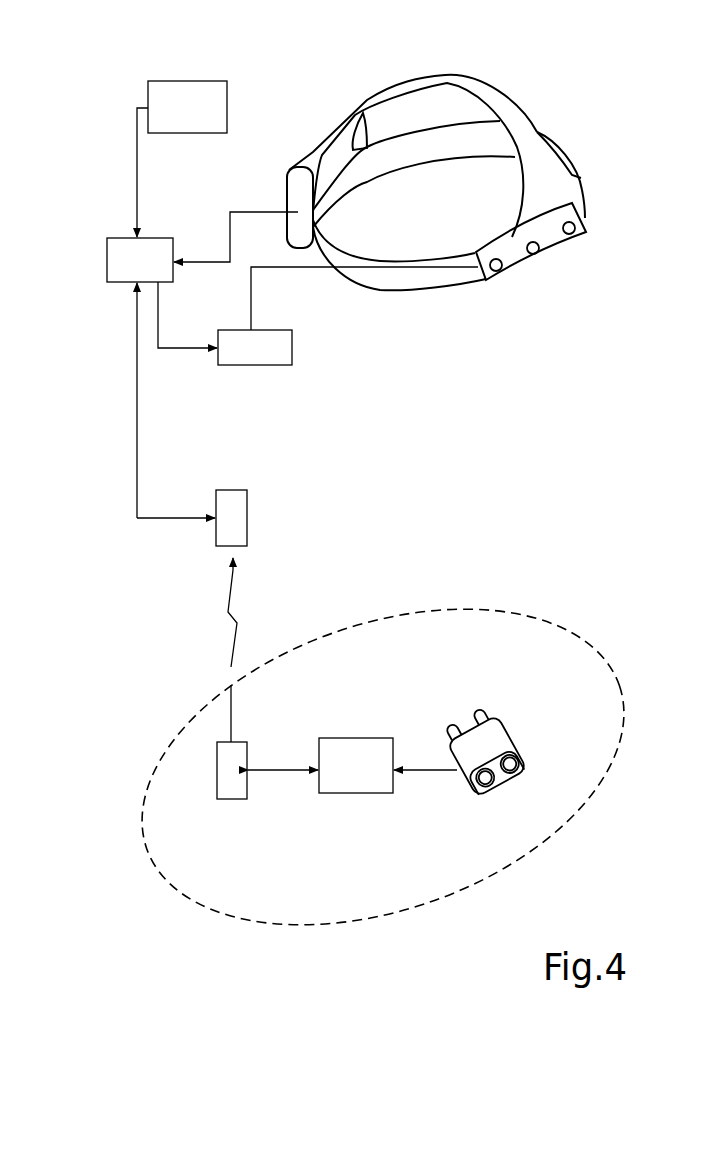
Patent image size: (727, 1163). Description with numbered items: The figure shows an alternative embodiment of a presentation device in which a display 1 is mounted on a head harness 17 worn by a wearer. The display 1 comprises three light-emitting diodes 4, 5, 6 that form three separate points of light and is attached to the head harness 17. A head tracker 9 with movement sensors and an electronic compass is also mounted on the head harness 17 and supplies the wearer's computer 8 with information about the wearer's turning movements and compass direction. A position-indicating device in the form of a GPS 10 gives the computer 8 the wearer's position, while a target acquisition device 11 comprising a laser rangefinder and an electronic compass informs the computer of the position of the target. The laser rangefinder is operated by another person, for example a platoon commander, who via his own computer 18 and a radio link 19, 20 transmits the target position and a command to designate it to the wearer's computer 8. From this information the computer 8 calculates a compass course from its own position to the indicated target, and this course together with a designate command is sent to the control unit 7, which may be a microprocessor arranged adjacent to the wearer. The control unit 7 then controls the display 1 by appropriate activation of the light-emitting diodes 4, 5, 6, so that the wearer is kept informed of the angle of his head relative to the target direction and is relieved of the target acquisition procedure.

The display 1 is at (584, 207).
The light-emitting diode 4 is at (500, 273).
The light-emitting diode 5 is at (536, 255).
The light-emitting diode 6 is at (573, 235).
The control unit 7 is at (292, 347).
The computer 8 is at (107, 258).
The head tracker 9 is at (315, 150).
The GPS 10 is at (187, 80).
The target acquisition device 11 is at (497, 735).
The head harness 17 is at (495, 102).
The computer 18 is at (356, 745).
The radio link 19 is at (233, 800).
The radio link 20 is at (247, 513).